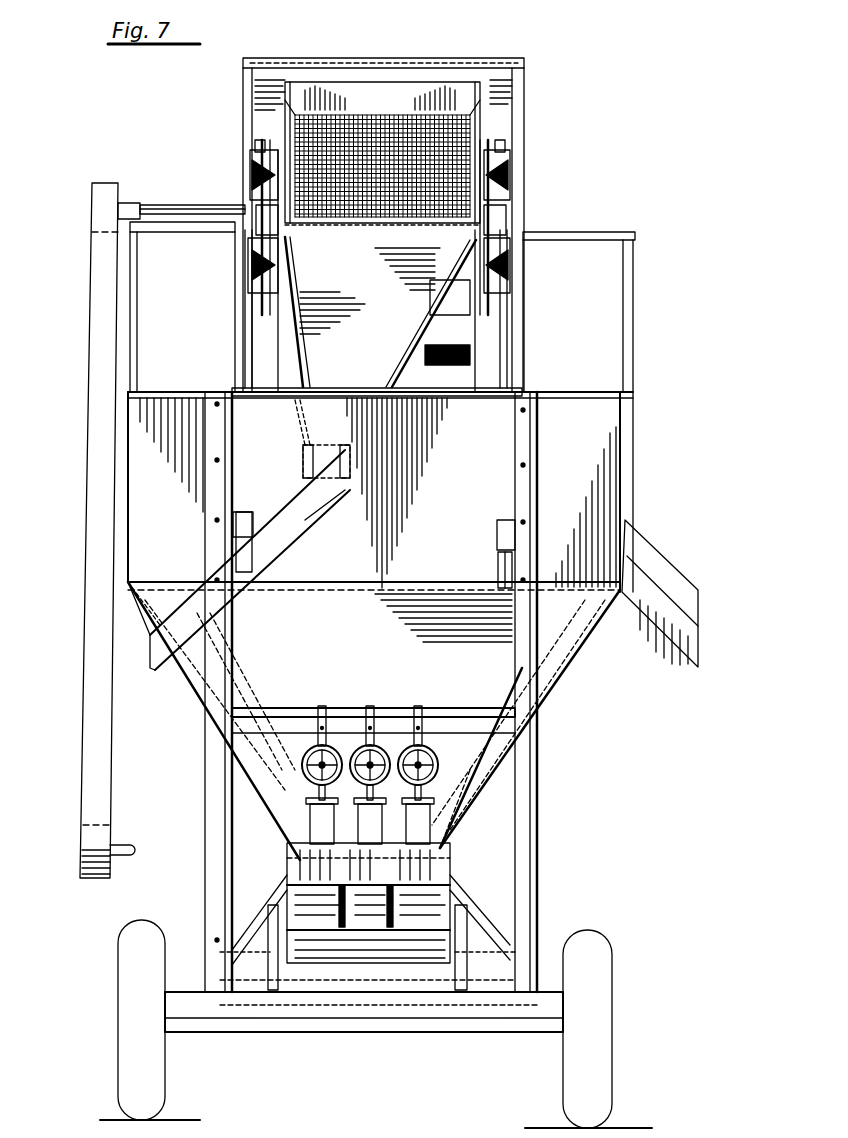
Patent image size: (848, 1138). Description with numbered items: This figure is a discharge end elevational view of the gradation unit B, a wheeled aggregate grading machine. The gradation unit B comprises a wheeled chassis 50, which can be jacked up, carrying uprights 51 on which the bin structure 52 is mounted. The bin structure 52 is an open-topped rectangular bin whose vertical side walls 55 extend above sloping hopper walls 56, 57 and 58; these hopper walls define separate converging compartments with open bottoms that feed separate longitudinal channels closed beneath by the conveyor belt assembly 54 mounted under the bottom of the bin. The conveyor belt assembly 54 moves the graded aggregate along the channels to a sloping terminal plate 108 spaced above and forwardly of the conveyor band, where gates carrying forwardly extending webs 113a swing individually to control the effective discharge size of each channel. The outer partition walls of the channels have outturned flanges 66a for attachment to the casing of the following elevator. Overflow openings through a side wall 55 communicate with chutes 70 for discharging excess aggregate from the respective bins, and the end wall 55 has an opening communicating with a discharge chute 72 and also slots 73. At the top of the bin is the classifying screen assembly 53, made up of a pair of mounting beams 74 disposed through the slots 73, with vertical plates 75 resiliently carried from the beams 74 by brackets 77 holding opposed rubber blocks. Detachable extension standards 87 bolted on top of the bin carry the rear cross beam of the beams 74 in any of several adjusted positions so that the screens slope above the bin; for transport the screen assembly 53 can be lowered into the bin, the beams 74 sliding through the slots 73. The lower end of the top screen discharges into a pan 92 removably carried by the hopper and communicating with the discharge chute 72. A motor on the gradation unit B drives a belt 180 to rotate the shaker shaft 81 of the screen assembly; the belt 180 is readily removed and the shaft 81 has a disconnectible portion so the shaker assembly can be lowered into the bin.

The wheeled chassis 50 is at (528, 1012).
The uprights 51 is at (208, 812).
The bin structure 52 is at (594, 454).
The classifying screen assembly 53 is at (490, 141).
The conveyor belt assembly 54 is at (453, 940).
The vertical side walls 55 is at (572, 412).
The sloping hopper wall 56 is at (458, 822).
The sloping hopper wall 57 is at (458, 803).
The sloping hopper wall 58 is at (468, 722).
The outturned flanges 66a is at (445, 880).
The chutes 70 is at (653, 551).
The discharge chute 72 is at (272, 540).
The slots 73 is at (246, 524).
The mounting beams 74 is at (250, 330).
The vertical plates 75 is at (285, 296).
The brackets 77 is at (264, 185).
The shaker shaft 81 is at (156, 218).
The detachable extension standards 87 is at (246, 143).
The pan 92 is at (392, 373).
The sloping terminal plate 108 is at (300, 836).
The webs 113a is at (310, 820).
The belt 180 is at (92, 640).
The gradation unit B is at (606, 226).